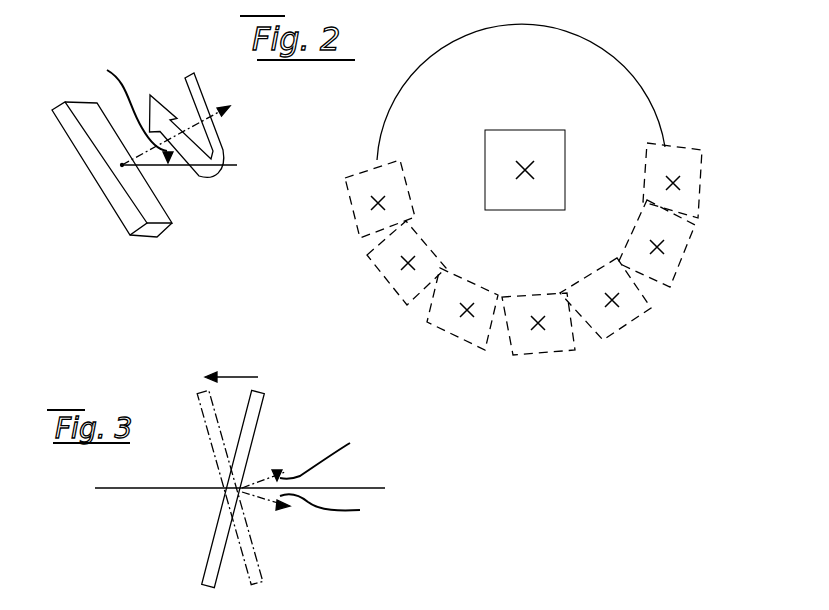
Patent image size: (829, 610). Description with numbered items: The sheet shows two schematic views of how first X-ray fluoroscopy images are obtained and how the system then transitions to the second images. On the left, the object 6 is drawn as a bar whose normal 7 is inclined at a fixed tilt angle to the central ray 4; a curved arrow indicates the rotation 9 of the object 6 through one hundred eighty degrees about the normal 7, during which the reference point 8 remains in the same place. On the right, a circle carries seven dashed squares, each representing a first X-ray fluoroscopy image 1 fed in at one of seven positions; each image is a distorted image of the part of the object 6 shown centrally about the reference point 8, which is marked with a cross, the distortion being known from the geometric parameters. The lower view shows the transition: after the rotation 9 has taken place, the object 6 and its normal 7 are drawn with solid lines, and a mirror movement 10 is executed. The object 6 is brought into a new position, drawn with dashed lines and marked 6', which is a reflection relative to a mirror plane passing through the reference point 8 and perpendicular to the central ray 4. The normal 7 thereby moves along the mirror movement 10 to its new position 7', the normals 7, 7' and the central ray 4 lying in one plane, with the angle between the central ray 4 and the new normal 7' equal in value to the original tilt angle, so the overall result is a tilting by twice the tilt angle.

In FIG. 2, the first X-ray fluoroscopy image 1 is at (358, 220).
In FIG. 2, the central ray 4 is at (188, 171).
In FIG. 3, the central ray 4 is at (372, 485).
In FIG. 2, the object 6 is at (344, 128).
In FIG. 3, the object 6 is at (258, 482).
In FIG. 3, the object in new position 6' is at (206, 487).
In FIG. 2, the normal 7 is at (184, 124).
In FIG. 3, the normal 7 is at (292, 447).
In FIG. 3, the normal in new position 7' is at (294, 544).
In FIG. 2, the reference point 8 is at (527, 166).
In FIG. 2, the rotation 9 is at (187, 113).
In FIG. 3, the mirror movement 10 is at (231, 365).